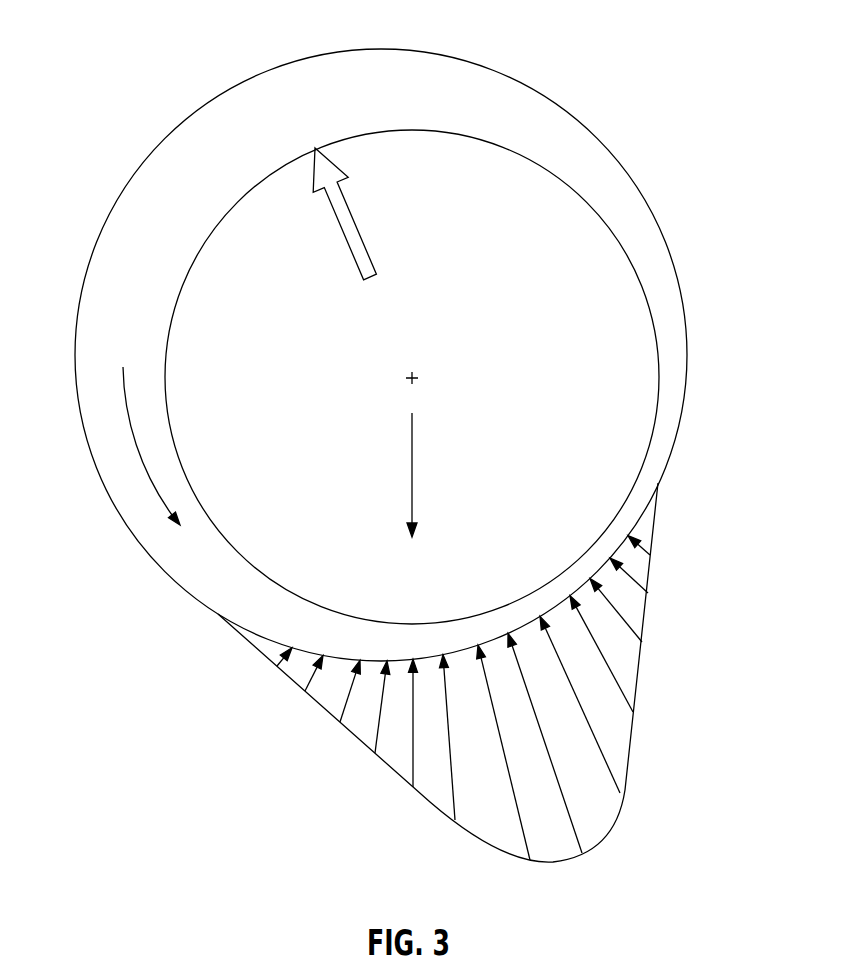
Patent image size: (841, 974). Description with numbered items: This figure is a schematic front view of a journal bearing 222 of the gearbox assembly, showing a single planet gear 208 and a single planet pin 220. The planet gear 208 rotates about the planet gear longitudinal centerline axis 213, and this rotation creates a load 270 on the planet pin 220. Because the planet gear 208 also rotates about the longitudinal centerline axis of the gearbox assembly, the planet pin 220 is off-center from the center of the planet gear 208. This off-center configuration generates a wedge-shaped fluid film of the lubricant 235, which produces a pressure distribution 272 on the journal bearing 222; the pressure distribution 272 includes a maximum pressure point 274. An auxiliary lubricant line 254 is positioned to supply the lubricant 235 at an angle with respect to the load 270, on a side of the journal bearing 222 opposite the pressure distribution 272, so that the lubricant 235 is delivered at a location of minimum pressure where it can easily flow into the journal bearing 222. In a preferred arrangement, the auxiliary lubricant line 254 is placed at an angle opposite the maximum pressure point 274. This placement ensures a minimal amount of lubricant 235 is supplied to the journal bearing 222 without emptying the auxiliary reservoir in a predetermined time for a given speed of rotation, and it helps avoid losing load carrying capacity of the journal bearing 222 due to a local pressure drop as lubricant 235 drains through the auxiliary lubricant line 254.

The planet gear 208 is at (378, 50).
The planet pin 220 is at (660, 377).
The journal bearing 222 is at (404, 337).
The planet gear longitudinal centerline axis 213 is at (416, 368).
The auxiliary lubricant line 254 is at (357, 228).
The load 270 is at (412, 470).
The lubricant 235 is at (128, 425).
The pressure distribution 272 is at (640, 675).
The maximum pressure point 274 is at (577, 860).